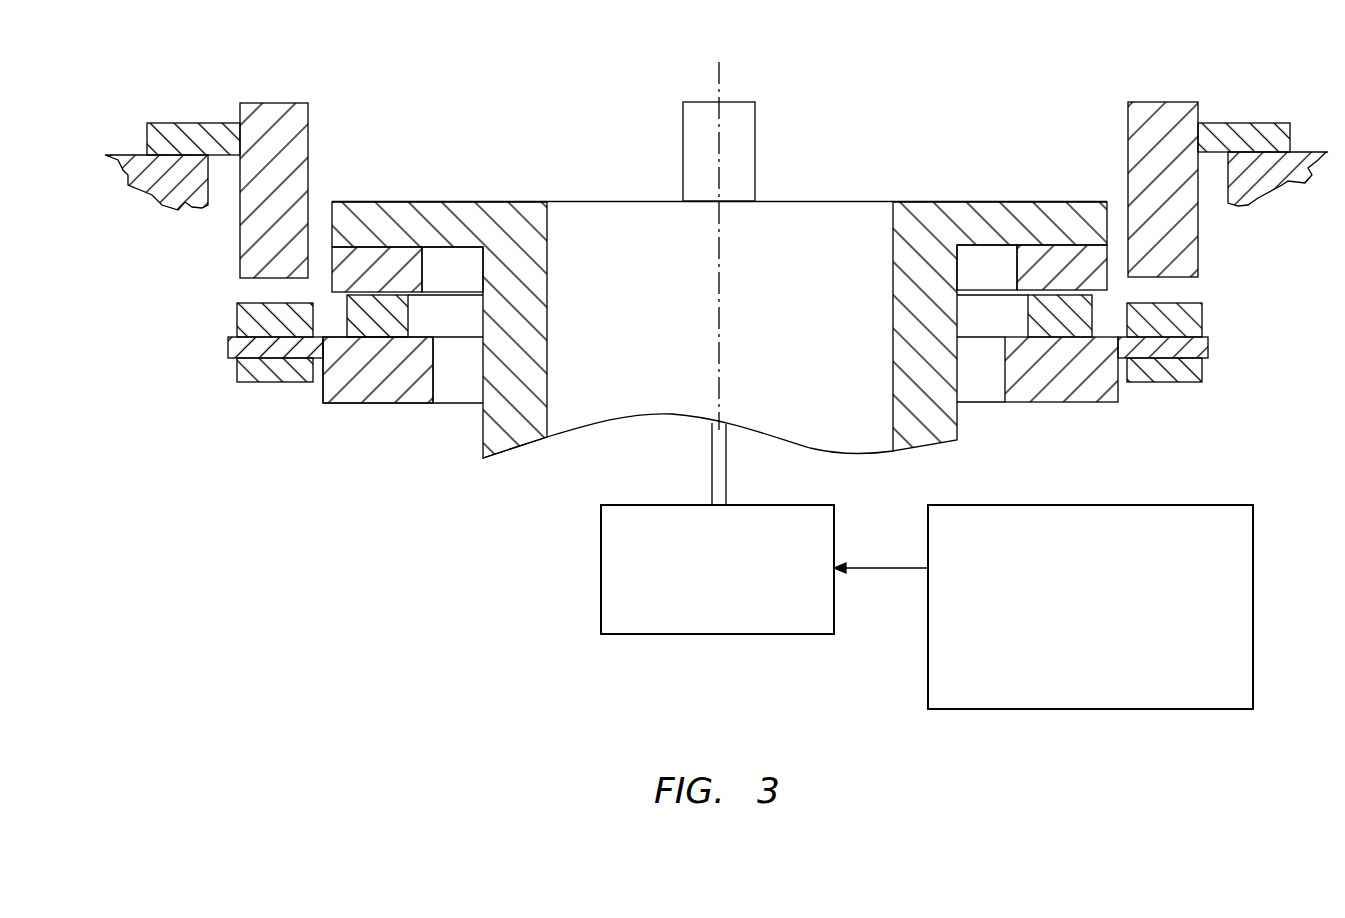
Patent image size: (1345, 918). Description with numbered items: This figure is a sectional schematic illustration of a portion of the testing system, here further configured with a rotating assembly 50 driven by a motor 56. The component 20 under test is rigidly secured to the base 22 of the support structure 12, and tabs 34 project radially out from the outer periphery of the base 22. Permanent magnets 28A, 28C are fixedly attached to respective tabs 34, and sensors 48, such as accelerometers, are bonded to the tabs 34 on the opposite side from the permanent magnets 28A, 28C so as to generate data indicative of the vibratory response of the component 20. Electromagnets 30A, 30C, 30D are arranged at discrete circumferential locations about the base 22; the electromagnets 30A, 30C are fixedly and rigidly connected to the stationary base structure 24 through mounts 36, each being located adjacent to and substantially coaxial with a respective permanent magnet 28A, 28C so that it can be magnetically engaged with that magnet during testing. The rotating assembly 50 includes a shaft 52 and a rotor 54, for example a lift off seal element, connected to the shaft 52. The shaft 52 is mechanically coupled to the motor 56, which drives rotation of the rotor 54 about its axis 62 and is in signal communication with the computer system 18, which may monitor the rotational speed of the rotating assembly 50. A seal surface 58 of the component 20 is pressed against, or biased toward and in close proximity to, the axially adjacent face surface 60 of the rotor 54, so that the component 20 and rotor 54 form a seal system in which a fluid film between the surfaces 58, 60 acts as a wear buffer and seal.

The support structure 12 is at (404, 411).
The computer system 18 is at (1038, 710).
The component 20 is at (448, 284).
The base 22 is at (360, 393).
The stationary base structure 24 is at (148, 205).
The permanent magnet 28A is at (237, 322).
The permanent magnet 28C is at (1202, 320).
The electromagnet 30A is at (289, 103).
The electromagnet 30C is at (1128, 122).
The electromagnet 30D is at (755, 122).
The tab 34 is at (228, 347).
The mount 36 is at (177, 123).
The sensor 48 is at (268, 383).
The rotating assembly 50 is at (484, 465).
The shaft 52 is at (524, 447).
The rotor 54 is at (383, 262).
The motor 56 is at (643, 634).
The seal surface 58 is at (1052, 273).
The face surface 60 is at (1067, 300).
The axis 62 is at (720, 258).